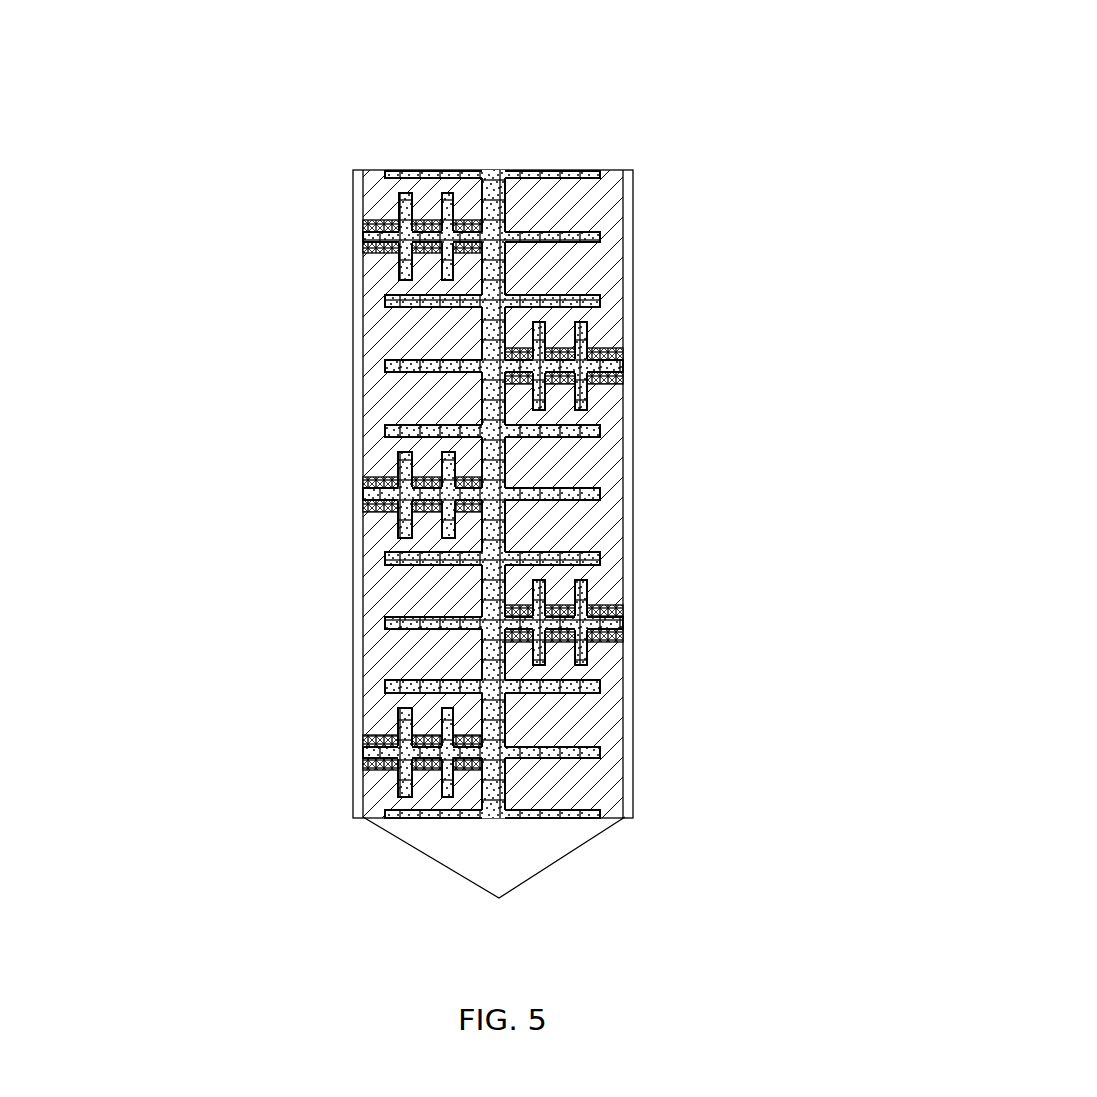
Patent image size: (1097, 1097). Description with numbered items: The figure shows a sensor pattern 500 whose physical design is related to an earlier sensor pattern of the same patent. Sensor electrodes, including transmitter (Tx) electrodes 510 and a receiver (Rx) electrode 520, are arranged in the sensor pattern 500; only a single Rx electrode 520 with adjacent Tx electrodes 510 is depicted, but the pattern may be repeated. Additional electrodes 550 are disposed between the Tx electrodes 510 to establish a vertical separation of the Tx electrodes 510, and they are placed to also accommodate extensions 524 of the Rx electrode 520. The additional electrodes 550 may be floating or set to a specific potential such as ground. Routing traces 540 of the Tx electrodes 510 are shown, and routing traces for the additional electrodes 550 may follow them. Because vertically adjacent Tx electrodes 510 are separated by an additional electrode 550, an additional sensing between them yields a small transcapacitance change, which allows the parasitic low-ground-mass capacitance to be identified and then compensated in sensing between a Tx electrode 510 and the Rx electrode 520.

The sensor pattern 500 is at (809, 110).
The transmitter (Tx) electrodes 510 is at (388, 782).
The receiver (Rx) electrode 520 is at (488, 177).
The extensions 524 is at (588, 325).
The routing traces 540 is at (494, 901).
The additional electrodes 550 is at (607, 608).